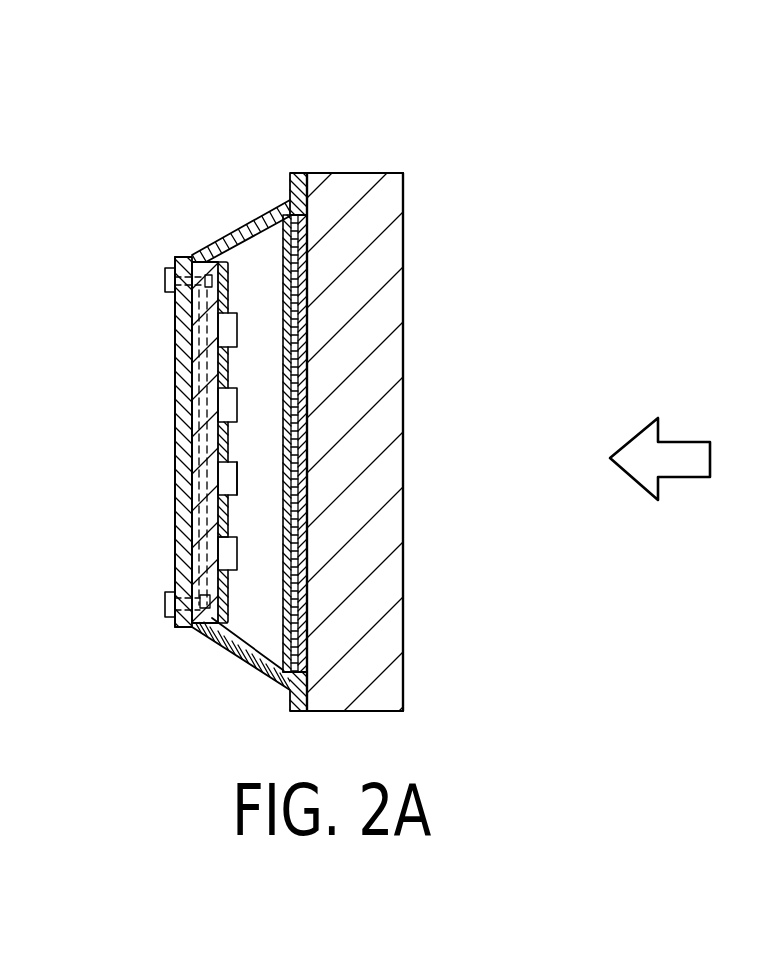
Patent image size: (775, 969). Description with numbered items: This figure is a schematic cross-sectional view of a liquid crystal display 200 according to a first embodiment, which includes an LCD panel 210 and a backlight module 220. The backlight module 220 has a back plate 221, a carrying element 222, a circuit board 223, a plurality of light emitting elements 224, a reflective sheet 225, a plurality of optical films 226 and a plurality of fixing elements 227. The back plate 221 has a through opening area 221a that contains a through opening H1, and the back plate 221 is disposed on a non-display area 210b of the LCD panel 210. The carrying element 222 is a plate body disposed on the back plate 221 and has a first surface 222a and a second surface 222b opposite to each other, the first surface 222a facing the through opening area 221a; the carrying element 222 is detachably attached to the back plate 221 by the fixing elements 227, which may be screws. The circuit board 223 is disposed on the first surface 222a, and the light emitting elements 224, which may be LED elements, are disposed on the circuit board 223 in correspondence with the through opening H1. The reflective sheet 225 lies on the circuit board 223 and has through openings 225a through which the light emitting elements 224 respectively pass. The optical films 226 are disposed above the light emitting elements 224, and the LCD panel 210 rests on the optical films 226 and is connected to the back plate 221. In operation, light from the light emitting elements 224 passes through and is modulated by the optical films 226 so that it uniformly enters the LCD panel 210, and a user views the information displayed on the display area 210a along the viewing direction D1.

The liquid crystal display 200 is at (640, 654).
The LCD panel 210 is at (403, 223).
The display area 210a is at (403, 297).
The non-display area 210b is at (280, 278).
The backlight module 220 is at (149, 160).
The back plate 221 is at (235, 234).
The through opening area 221a is at (197, 442).
The carrying element 222 is at (180, 328).
The first surface 222a is at (193, 443).
The second surface 222b is at (175, 383).
The circuit board 223 is at (172, 468).
The light emitting element 224 is at (230, 333).
The reflective sheet 225 is at (223, 368).
The through opening 225a is at (236, 481).
The optical film 226 is at (223, 472).
The fixing element 227 is at (164, 280).
The through opening H1 is at (222, 548).
The viewing direction D1 is at (683, 440).